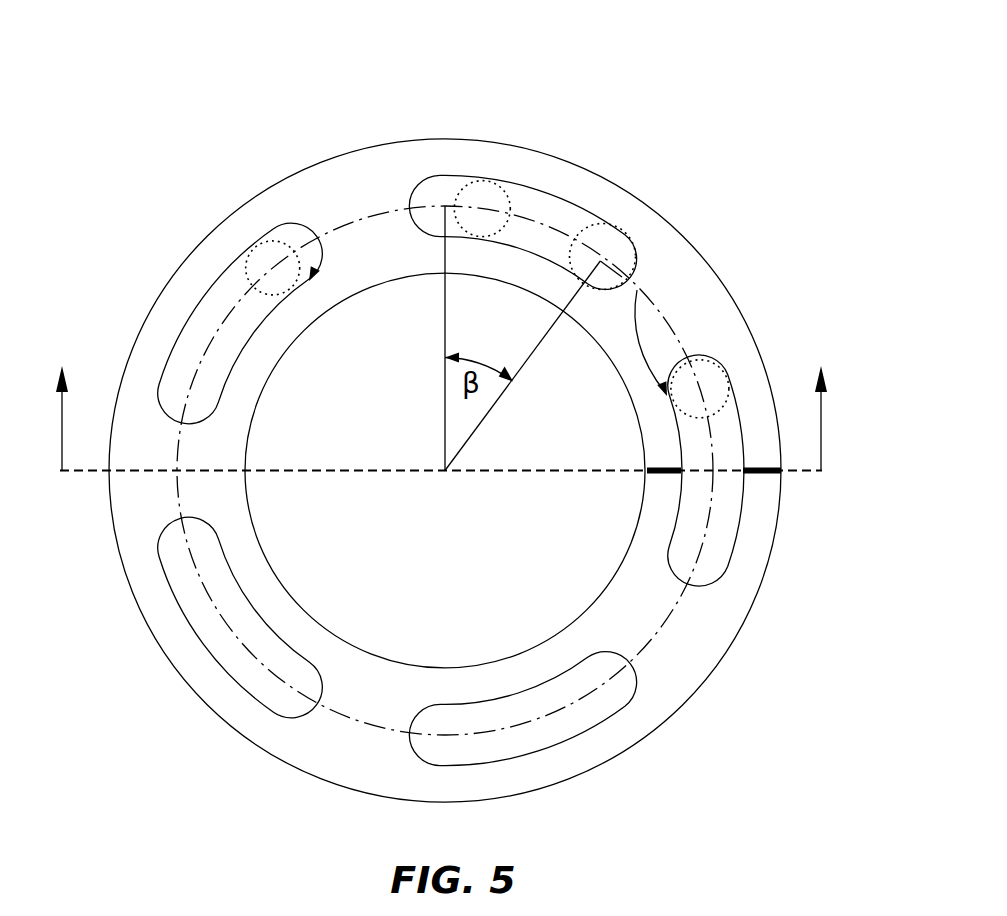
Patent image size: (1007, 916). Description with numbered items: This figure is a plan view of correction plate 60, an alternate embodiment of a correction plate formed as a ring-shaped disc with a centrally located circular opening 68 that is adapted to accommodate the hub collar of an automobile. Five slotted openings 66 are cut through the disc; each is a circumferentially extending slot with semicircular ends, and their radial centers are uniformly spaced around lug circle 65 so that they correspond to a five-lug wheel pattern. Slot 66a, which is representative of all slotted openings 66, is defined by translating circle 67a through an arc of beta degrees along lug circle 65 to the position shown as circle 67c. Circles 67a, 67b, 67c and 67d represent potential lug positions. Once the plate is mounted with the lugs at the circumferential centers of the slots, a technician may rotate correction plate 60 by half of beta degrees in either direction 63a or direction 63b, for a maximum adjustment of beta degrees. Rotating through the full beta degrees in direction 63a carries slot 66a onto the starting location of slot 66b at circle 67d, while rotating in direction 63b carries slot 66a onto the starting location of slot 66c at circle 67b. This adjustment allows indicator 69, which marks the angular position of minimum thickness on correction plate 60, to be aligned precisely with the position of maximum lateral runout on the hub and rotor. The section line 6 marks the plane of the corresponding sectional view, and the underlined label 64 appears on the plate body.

The correction plate 60 is at (676, 133).
The direction 63a is at (633, 335).
The direction 63b is at (375, 247).
The ring body 64 is at (703, 657).
The lug circle 65 is at (641, 285).
The slotted openings 66 is at (213, 654).
The slot 66a is at (563, 183).
The slot 66b is at (740, 533).
The slot 66c is at (171, 346).
The circle 67a is at (618, 212).
The circle 67b is at (262, 268).
The circle 67c is at (466, 230).
The circle 67d is at (719, 367).
The opening 68 is at (300, 343).
The indicator 69 is at (758, 473).
The section line 6- 6 is at (440, 431).